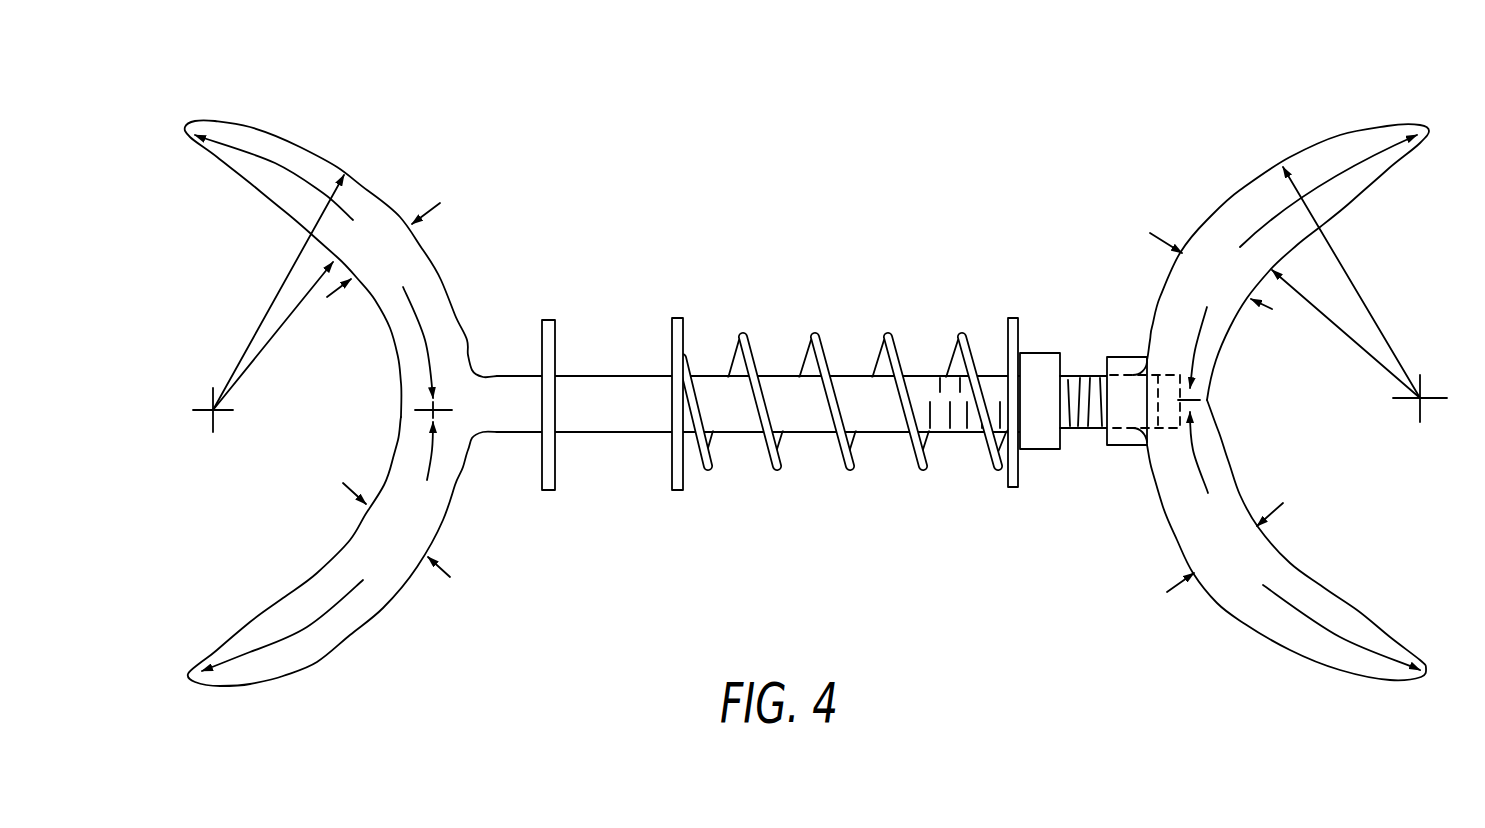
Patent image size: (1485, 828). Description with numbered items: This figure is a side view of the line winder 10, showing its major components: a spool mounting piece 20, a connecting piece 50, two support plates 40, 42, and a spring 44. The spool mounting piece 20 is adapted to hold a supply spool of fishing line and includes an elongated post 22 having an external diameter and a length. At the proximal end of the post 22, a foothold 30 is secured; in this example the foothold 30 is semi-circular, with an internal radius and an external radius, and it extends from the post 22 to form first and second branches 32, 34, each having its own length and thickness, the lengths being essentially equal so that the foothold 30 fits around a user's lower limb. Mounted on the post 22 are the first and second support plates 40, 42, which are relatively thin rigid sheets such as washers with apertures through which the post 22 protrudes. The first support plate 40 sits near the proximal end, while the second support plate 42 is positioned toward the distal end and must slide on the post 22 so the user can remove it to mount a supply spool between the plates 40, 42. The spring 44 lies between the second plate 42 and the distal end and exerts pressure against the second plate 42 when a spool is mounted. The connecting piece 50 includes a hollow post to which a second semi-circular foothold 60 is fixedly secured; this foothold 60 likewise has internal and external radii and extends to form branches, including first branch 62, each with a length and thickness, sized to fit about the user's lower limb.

The line winder 10 is at (917, 247).
The spool mounting piece 20 is at (835, 424).
The post 22 is at (758, 416).
The foothold 30 is at (357, 183).
The first branch 32 is at (185, 125).
The second branch 34 is at (187, 680).
The first support plate 40 is at (556, 487).
The second support plate 42 is at (681, 488).
The spring 44 is at (776, 470).
The connecting piece 50 is at (1313, 377).
The foothold 60 is at (1240, 203).
The first branch 62 is at (1433, 130).